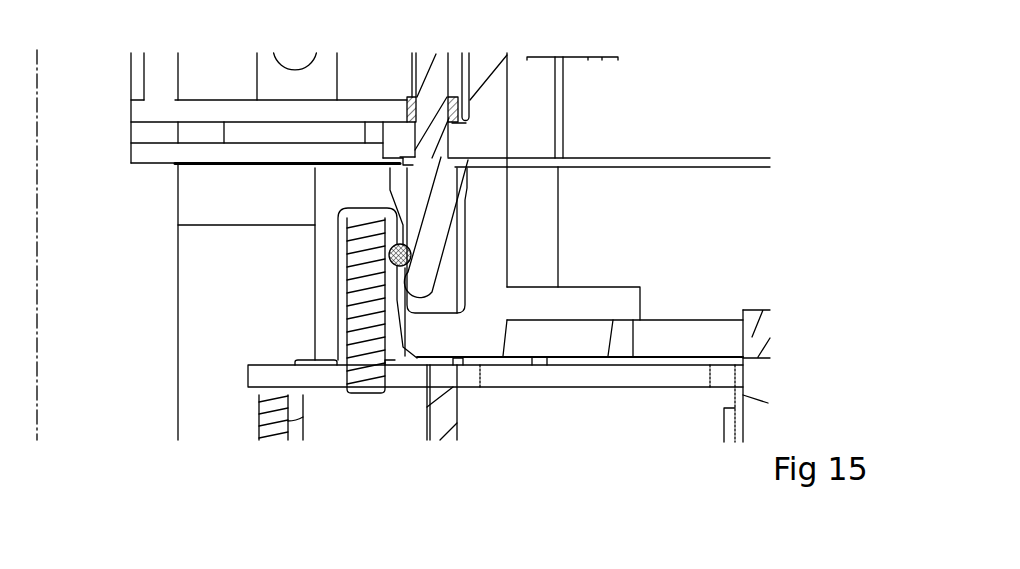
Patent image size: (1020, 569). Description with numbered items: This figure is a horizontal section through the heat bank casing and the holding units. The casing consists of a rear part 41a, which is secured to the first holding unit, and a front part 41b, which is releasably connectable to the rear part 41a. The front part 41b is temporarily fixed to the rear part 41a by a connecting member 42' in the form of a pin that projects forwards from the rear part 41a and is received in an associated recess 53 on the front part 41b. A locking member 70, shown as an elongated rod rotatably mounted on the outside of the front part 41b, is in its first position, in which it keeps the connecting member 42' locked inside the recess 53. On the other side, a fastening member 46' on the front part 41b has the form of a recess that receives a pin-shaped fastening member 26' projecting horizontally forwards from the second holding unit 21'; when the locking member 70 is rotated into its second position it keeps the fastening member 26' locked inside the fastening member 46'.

The rear part 41a is at (490, 73).
The front part 41b is at (713, 337).
The connecting member 42' is at (512, 197).
The recess 53 is at (457, 263).
The locking member 70 is at (400, 254).
The fastening member 26' is at (319, 305).
The fastening member 46' is at (335, 286).
The second holding unit 21' is at (554, 402).